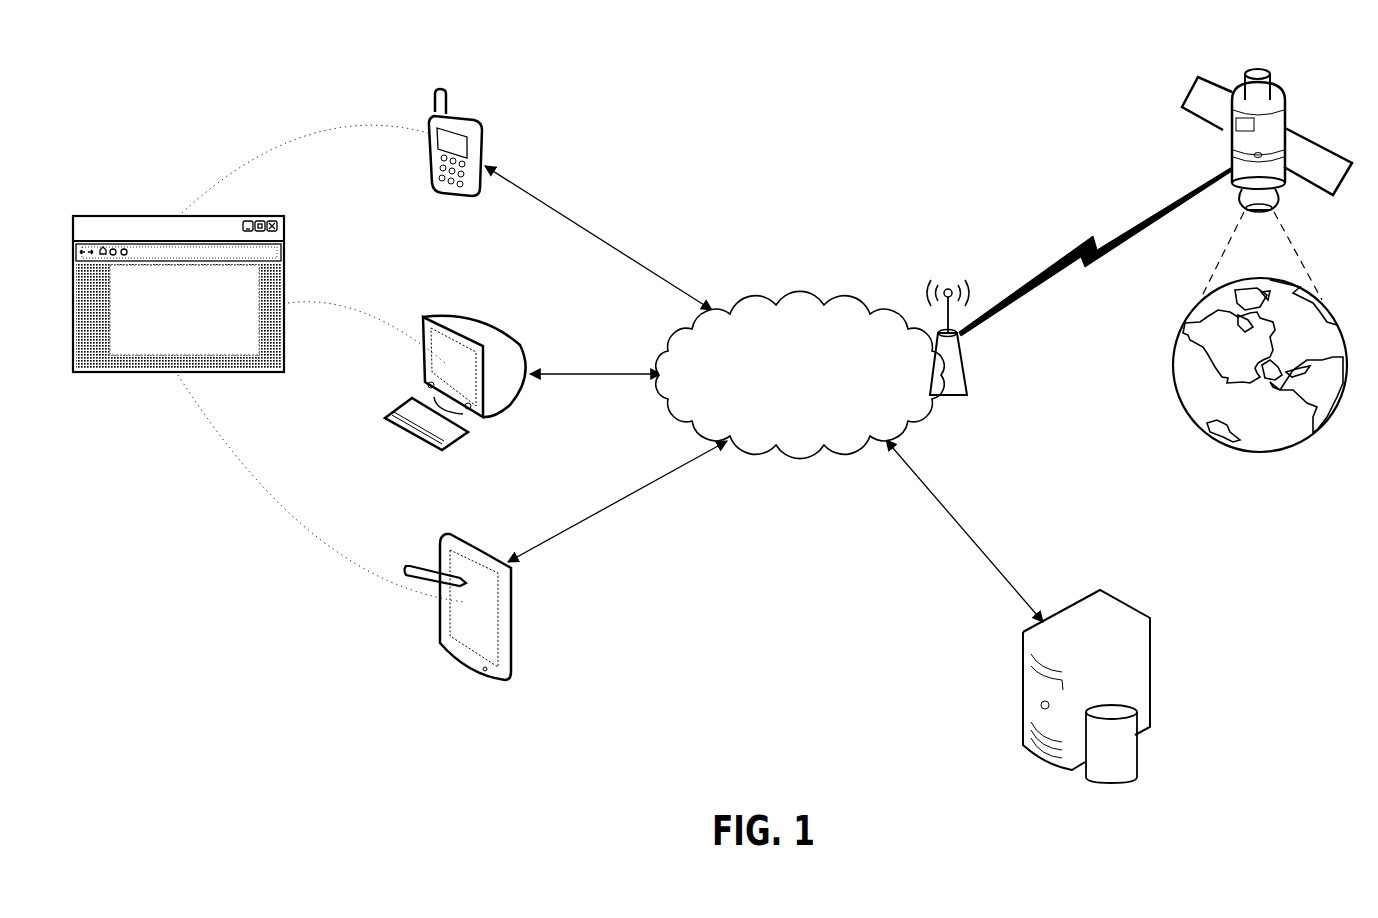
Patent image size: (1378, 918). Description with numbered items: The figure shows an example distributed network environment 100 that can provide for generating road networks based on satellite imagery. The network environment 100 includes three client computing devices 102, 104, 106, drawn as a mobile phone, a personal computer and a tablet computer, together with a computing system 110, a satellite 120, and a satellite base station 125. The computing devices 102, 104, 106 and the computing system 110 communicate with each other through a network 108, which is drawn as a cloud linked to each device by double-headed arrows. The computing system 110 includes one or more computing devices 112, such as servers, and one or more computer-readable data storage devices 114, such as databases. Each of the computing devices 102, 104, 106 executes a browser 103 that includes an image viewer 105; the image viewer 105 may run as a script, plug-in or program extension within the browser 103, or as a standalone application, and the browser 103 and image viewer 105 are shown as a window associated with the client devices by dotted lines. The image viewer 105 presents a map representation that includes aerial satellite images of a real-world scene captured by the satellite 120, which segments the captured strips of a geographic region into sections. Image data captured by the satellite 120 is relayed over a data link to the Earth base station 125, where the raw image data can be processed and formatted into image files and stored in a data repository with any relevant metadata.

The distributed network environment 100 is at (942, 97).
The computing device 102 is at (469, 116).
The browser 103 is at (178, 293).
The computing device 104 is at (470, 320).
The image viewer 105 is at (184, 310).
The computing device 106 is at (500, 681).
The network 108 is at (800, 374).
The computing system 110 is at (1212, 676).
The computing device 112 is at (1125, 602).
The computer-readable data storage device 114 is at (1115, 782).
The satellite 120 is at (1268, 66).
The satellite base station 125 is at (953, 398).